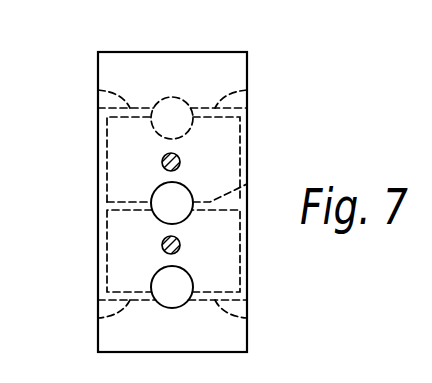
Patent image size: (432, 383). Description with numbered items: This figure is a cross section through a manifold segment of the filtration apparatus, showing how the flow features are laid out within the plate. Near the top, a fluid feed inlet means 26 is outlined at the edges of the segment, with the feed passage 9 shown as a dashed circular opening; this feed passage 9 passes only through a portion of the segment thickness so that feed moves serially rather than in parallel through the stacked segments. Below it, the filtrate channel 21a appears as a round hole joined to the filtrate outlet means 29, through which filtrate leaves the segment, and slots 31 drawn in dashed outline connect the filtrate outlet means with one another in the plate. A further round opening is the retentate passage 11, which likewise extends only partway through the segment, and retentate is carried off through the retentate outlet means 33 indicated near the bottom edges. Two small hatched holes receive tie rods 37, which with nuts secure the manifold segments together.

The feed passage 9 is at (188, 101).
The retentate passage 11 is at (190, 273).
The filtrate channel 21a is at (187, 187).
The fluid feed inlet means 26 is at (100, 88).
The filtrate outlet means 29 is at (247, 185).
The slot 31 is at (107, 140).
The retentate outlet means 33 is at (103, 310).
The tie rod 37 is at (162, 162).